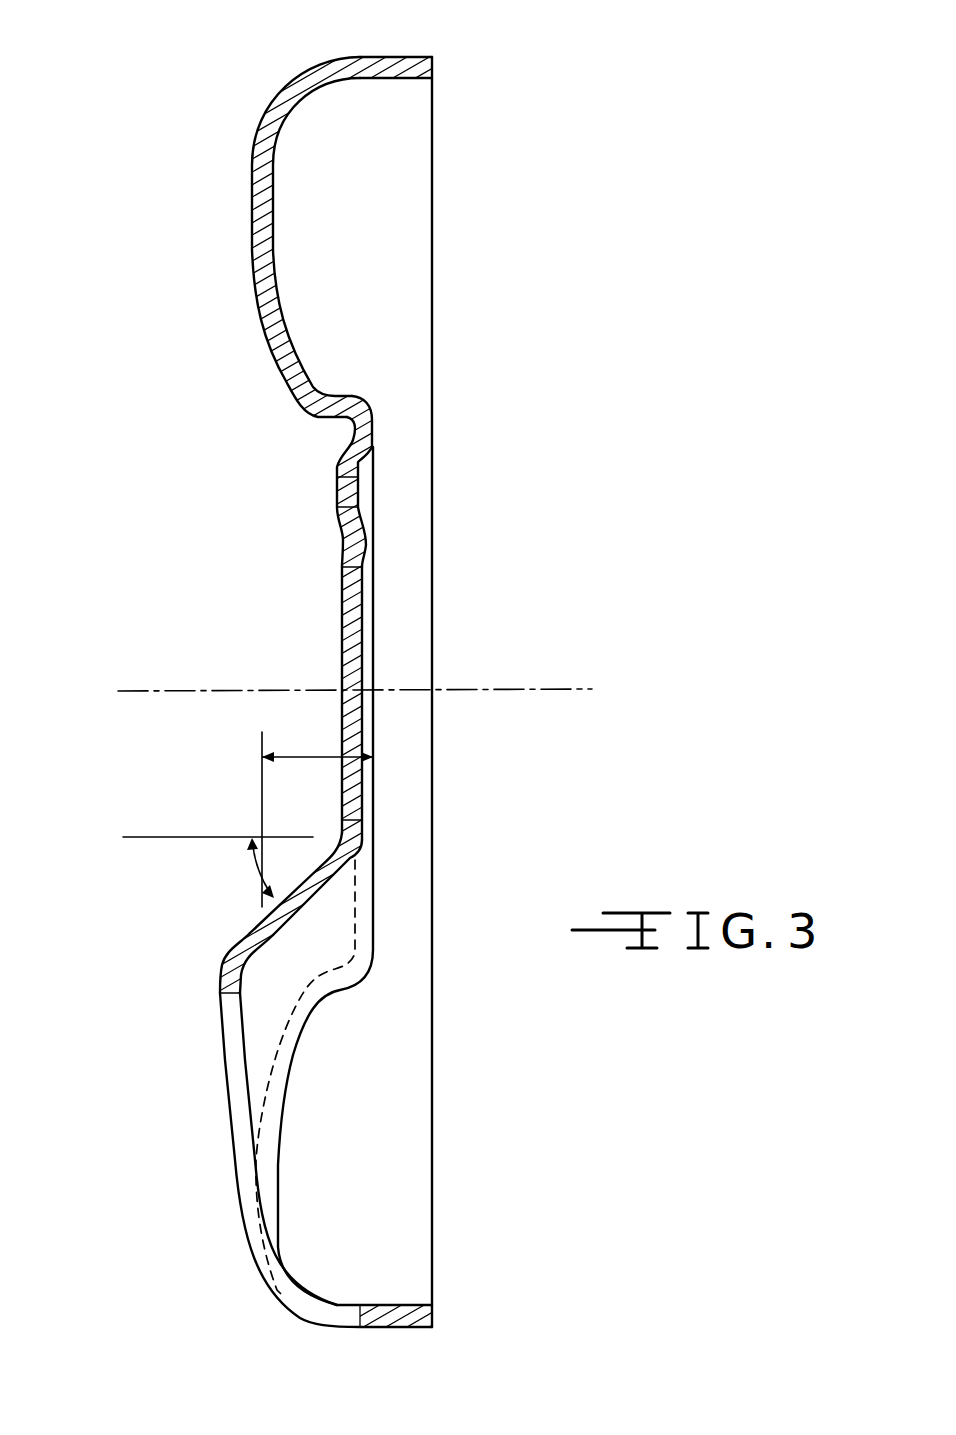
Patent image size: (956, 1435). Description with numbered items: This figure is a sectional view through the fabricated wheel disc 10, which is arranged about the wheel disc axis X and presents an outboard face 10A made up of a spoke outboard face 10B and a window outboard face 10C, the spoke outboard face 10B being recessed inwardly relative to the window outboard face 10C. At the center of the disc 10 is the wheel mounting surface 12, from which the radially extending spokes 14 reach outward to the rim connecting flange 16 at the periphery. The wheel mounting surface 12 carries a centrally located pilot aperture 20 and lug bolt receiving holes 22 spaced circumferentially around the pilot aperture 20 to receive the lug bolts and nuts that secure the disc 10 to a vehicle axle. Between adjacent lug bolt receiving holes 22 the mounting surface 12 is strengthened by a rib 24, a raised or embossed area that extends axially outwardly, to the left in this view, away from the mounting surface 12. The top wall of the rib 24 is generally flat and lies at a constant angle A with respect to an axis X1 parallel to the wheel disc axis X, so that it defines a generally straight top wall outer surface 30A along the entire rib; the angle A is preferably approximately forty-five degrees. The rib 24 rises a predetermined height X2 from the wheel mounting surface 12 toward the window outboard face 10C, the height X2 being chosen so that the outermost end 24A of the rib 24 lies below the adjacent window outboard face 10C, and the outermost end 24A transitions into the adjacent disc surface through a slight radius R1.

The wheel disc 10 is at (550, 356).
The outboard face 10A is at (205, 195).
The spoke outboard face 10B is at (252, 245).
The window outboard face 10C is at (210, 975).
The wheel mounting surface 12 is at (385, 625).
The spokes 14 is at (267, 208).
The rim connecting flange 16 is at (395, 57).
The pilot aperture 20 is at (362, 790).
The lug bolt receiving holes 22 is at (352, 493).
The strengthening rib 24 is at (300, 893).
The outermost end of the rib 24A is at (265, 913).
The top wall outer surface 30A is at (335, 860).
The wheel disc axis X is at (538, 688).
The axis parallel to the wheel disc axis X1 is at (197, 836).
The rib height X2 is at (308, 752).
The angle A is at (260, 875).
The radius R1 is at (245, 924).